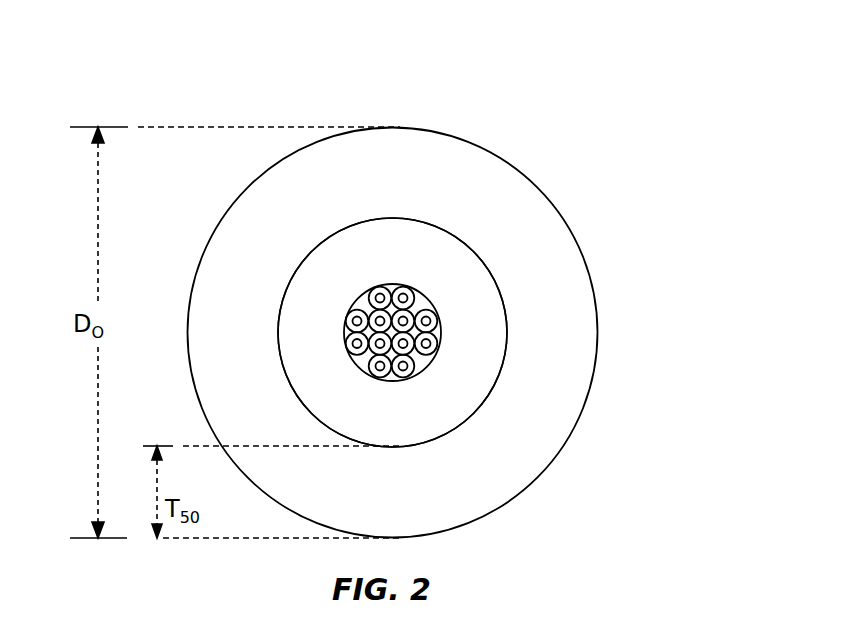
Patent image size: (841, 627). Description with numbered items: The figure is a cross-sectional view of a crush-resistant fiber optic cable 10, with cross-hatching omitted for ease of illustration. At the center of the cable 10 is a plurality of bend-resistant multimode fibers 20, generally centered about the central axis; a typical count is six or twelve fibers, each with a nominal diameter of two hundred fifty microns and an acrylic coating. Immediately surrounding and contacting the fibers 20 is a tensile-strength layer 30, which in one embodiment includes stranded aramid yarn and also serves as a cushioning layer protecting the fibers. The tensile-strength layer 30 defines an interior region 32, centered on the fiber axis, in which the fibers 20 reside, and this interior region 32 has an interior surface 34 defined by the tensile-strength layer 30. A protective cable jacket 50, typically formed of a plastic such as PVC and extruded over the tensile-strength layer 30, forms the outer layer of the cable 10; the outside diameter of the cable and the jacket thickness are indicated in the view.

The crush-resistant fiber optic cable 10 is at (196, 115).
The cable jacket 50 is at (532, 240).
The interior region 32 is at (477, 262).
The tensile-strength layer 30 is at (477, 307).
The bend-resistant multimode fibers 20 is at (517, 355).
The interior surface 34 is at (431, 352).